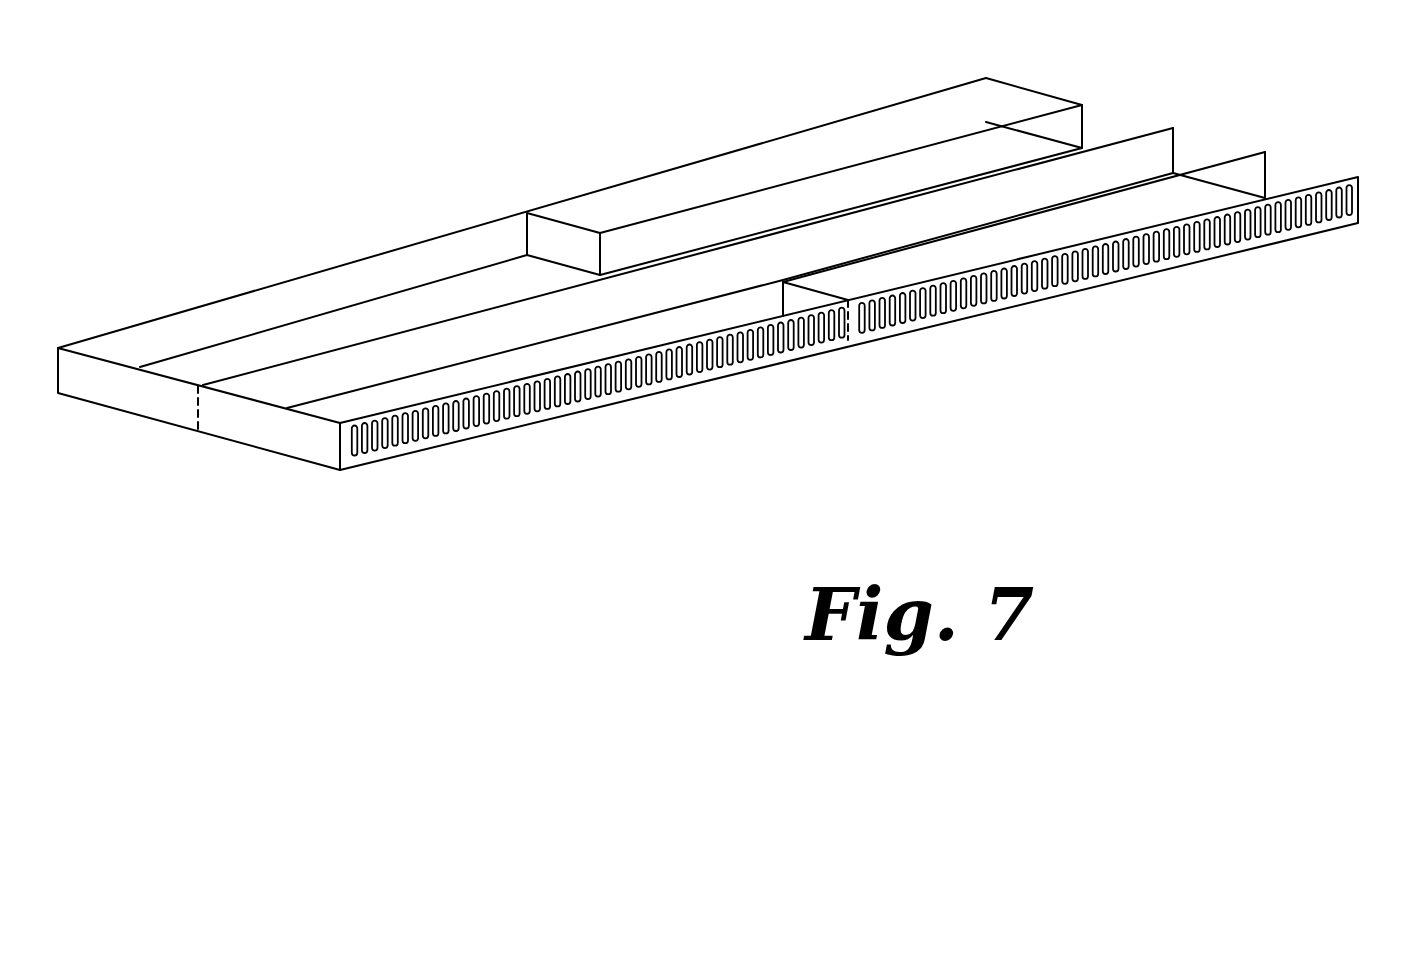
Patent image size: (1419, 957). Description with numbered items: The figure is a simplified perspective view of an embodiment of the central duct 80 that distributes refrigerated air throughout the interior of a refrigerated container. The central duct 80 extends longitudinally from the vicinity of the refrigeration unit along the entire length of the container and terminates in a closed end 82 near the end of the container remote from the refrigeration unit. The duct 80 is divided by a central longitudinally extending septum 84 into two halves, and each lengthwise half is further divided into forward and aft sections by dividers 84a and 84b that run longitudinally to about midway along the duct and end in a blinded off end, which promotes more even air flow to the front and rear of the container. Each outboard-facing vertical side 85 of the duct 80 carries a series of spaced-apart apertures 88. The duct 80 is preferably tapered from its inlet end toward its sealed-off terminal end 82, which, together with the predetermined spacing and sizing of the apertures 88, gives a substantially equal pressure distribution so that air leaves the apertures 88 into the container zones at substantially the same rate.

The central duct 80 is at (738, 276).
The closed end 82 is at (266, 431).
The divider 84a is at (1065, 130).
The central septum 84 is at (1160, 157).
The divider 84b is at (1245, 175).
The outboard-facing vertical side 85 is at (1358, 200).
The apertures 88 is at (567, 396).